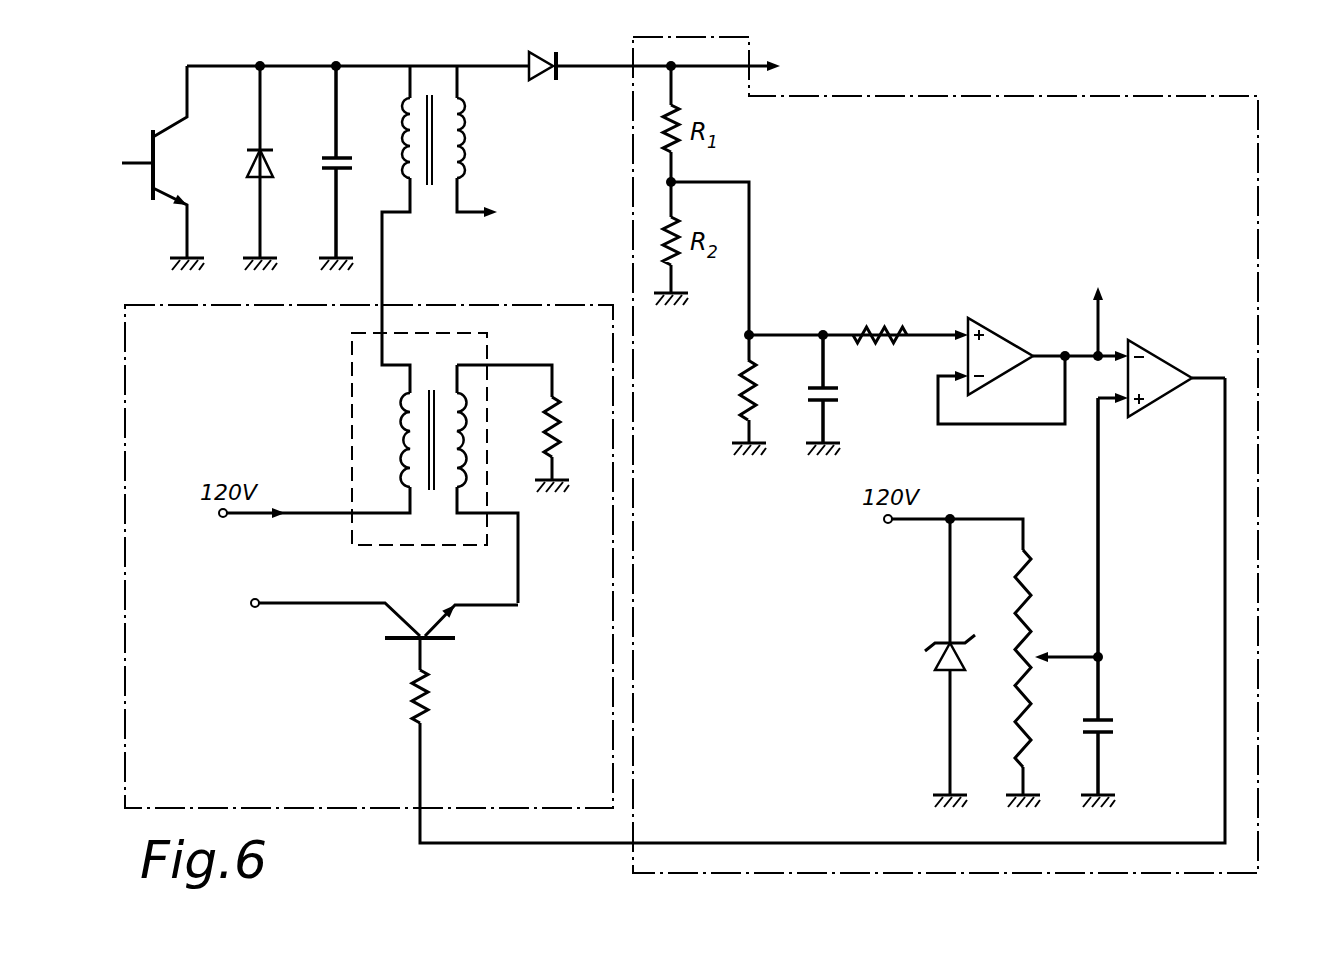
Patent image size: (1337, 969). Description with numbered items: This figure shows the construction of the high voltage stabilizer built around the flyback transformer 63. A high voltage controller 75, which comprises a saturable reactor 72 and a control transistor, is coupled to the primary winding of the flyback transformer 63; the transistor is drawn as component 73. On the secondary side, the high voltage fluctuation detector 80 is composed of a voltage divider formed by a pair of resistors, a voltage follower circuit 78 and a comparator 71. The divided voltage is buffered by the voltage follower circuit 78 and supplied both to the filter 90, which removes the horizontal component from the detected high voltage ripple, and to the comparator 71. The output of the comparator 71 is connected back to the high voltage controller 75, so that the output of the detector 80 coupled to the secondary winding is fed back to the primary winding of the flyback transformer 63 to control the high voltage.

The flyback transformer 63 is at (431, 95).
The comparator 71 is at (1167, 358).
The saturable reactor 72 is at (560, 480).
The transistor 73 is at (448, 642).
The high voltage controller 75 is at (125, 590).
The voltage follower circuit 78 is at (1006, 336).
The high voltage fluctuation detector 80 is at (1258, 592).
The horizontal component removing filter 90 is at (1102, 292).